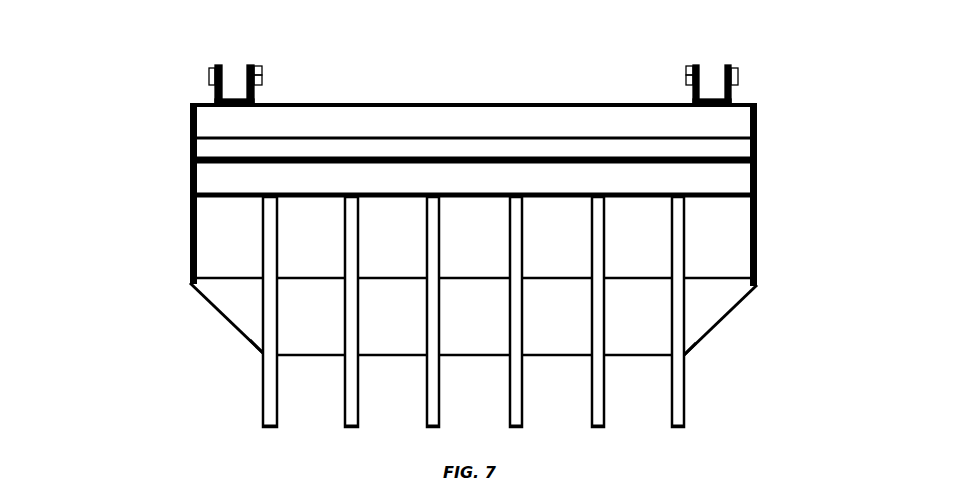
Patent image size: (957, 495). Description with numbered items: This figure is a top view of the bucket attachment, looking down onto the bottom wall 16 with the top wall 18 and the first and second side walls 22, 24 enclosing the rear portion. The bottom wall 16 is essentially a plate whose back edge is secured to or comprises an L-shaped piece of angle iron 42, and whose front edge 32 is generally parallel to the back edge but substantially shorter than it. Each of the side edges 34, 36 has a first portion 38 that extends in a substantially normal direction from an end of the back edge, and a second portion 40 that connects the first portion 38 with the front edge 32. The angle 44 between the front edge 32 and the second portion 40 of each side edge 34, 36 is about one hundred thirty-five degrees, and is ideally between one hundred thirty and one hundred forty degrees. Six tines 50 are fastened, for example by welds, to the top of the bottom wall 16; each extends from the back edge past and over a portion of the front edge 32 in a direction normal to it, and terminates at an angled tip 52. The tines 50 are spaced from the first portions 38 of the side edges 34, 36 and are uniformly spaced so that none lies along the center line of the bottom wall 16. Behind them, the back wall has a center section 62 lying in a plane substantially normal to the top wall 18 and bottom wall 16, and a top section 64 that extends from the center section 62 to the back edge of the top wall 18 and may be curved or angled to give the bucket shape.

The bottom wall 16 is at (473, 263).
The top wall 18 is at (240, 180).
The first side wall 22 is at (190, 130).
The second side wall 24 is at (763, 166).
The front edge 32 is at (553, 355).
The side edge 34 is at (200, 322).
The side edge 36 is at (734, 325).
The first portion 38 is at (203, 229).
The second portion 40 is at (243, 338).
The L-shaped piece of angle iron 42 is at (190, 160).
The angle 44 is at (260, 355).
The tines 50 is at (262, 402).
The angled tip 52 is at (262, 427).
The center section 62 is at (620, 103).
The top section 64 is at (378, 138).